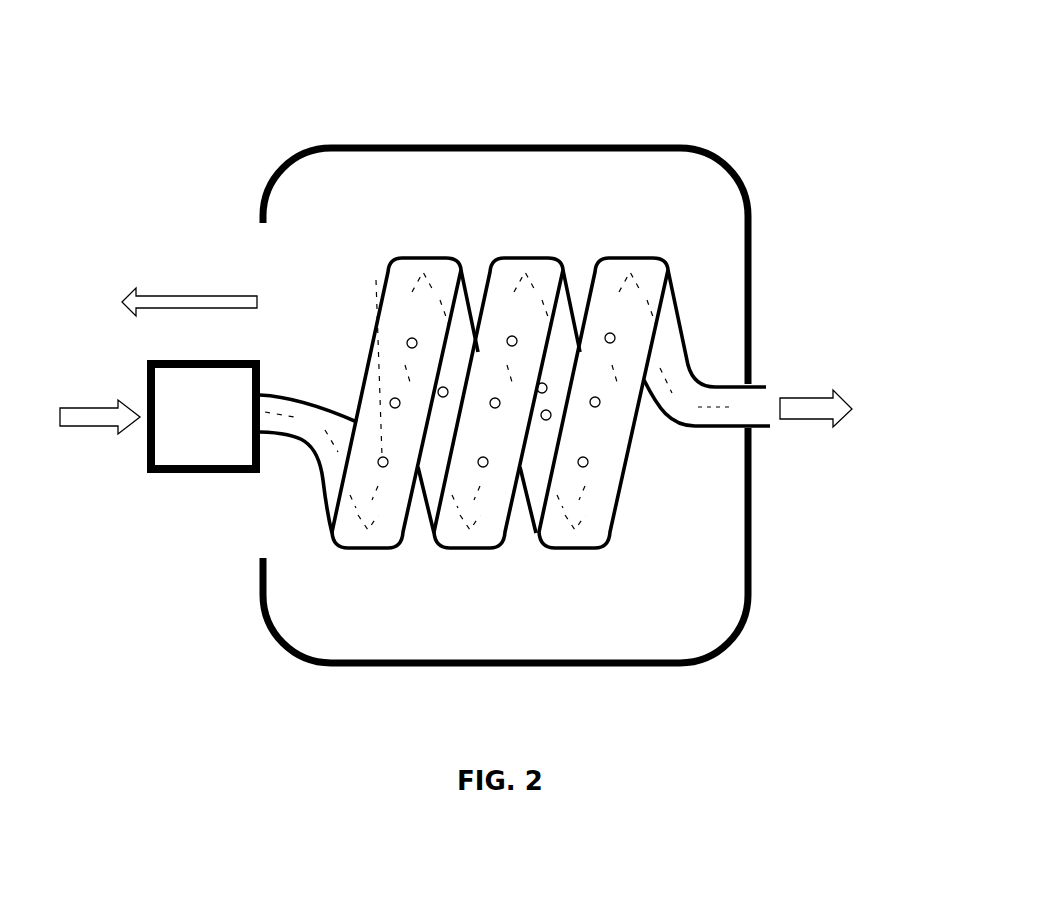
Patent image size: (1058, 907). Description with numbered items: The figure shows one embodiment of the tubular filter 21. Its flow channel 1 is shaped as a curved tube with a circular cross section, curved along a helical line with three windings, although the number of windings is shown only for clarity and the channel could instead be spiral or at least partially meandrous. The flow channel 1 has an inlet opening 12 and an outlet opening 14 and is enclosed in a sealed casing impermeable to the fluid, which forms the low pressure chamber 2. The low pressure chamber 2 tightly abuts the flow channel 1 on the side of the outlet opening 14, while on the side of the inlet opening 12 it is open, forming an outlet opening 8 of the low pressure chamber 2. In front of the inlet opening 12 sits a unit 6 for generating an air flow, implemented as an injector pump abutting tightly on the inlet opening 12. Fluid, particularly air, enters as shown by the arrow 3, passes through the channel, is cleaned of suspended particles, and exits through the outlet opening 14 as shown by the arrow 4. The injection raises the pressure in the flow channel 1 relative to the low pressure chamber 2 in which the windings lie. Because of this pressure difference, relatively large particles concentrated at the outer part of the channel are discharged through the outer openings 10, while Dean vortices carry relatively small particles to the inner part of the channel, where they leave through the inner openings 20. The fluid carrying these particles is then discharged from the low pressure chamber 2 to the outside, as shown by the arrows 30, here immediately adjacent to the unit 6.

The flow channel 1 is at (681, 316).
The low pressure chamber 2 is at (690, 147).
The arrow 3 is at (100, 406).
The arrow 4 is at (833, 408).
The unit for generating an air flow 6 is at (213, 432).
The outlet opening of the low pressure chamber 8 is at (247, 233).
The outer openings 10 is at (395, 397).
The inlet opening 12 is at (264, 409).
The outlet opening 14 is at (765, 395).
The inner openings 20 is at (542, 382).
The tubular filter 21 is at (399, 103).
The arrows 30 is at (182, 582).